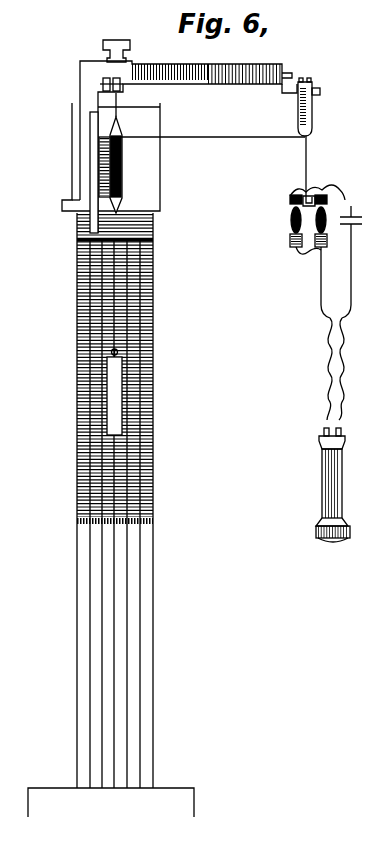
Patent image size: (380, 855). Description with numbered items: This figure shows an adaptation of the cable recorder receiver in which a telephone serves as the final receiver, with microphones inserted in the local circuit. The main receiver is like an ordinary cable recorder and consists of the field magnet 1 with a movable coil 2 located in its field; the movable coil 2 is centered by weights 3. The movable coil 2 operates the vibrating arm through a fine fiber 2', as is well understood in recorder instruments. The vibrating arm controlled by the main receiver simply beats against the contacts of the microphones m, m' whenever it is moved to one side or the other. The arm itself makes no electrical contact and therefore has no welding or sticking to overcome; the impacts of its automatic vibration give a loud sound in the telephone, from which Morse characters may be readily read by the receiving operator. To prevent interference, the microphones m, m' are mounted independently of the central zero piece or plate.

The field magnet 1 is at (77, 393).
The movable coil 2 is at (118, 153).
The fine fiber 2' is at (211, 149).
The weights 3 is at (114, 392).
The microphone m is at (279, 219).
The microphone m' is at (331, 219).